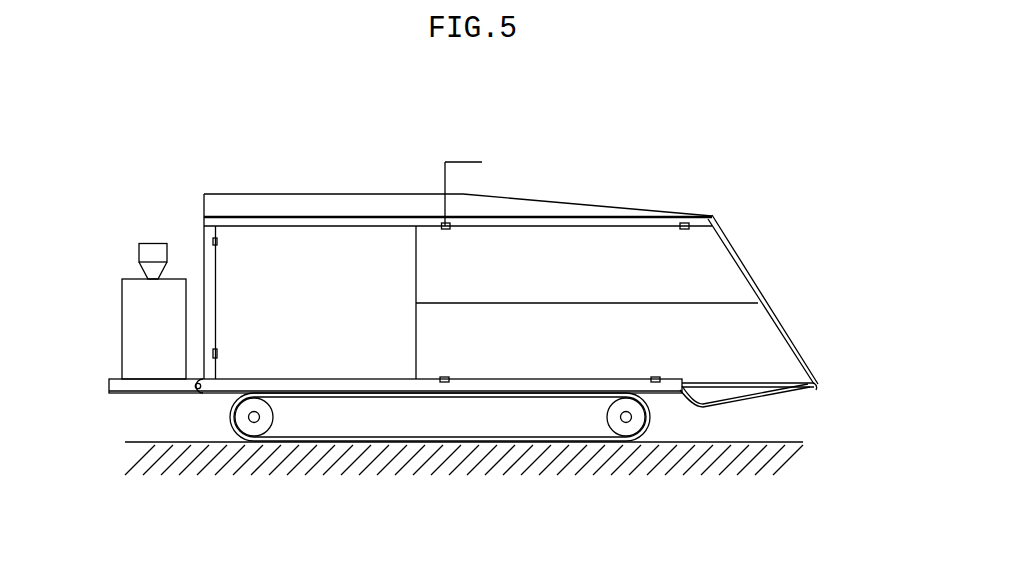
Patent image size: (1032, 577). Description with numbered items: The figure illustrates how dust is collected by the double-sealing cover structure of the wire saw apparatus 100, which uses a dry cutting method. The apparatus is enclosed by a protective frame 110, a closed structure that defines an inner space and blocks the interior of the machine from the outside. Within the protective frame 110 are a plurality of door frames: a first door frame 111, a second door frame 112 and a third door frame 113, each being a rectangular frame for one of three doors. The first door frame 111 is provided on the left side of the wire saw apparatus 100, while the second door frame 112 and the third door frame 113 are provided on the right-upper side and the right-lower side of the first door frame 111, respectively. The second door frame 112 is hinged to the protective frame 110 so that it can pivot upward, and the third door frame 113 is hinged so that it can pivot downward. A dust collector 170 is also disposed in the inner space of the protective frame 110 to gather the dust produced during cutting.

The wire saw apparatus 100 is at (473, 329).
The protective frame 110 is at (702, 220).
The first door frame 111 is at (342, 378).
The second door frame 112 is at (741, 260).
The third door frame 113 is at (792, 345).
The dust collector 170 is at (122, 317).